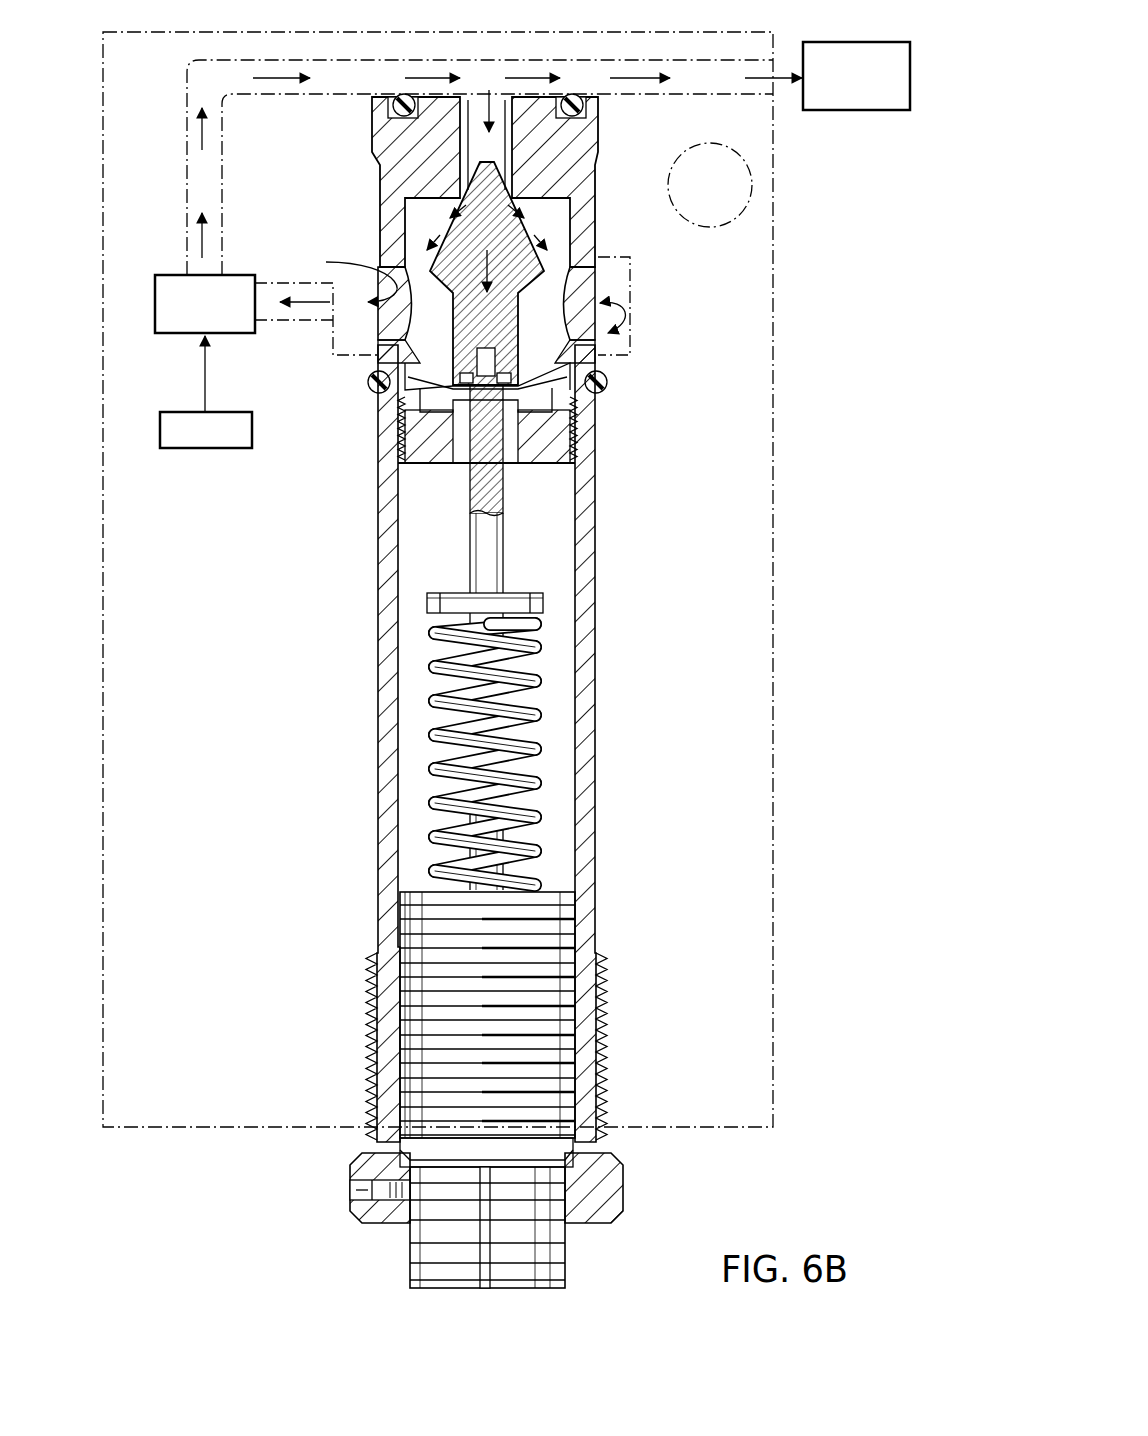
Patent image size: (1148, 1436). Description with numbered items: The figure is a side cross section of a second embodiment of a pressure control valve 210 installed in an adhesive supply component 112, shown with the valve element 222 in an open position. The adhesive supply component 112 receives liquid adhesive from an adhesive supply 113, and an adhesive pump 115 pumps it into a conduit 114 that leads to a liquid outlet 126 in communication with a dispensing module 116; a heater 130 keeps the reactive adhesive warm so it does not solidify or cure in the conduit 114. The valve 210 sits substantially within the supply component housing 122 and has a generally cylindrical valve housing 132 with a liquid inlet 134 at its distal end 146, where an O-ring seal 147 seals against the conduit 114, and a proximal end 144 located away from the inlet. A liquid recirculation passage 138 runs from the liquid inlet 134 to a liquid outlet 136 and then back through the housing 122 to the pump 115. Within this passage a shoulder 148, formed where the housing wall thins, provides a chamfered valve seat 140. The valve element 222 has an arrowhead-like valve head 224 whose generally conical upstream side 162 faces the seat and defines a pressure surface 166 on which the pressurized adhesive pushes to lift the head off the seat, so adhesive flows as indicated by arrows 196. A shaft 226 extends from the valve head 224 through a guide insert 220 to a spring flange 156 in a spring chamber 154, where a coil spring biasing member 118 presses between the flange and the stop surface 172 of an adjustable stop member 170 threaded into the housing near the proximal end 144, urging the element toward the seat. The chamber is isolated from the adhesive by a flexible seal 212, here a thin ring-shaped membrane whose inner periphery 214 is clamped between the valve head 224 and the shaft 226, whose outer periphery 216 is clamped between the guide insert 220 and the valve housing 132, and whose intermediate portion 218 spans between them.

The adhesive supply component 112 is at (780, 262).
The adhesive supply 113 is at (172, 412).
The conduit 114 is at (187, 126).
The adhesive pump 115 is at (172, 275).
The dispensing module 116 is at (836, 42).
The biasing member 118 is at (542, 742).
The supply component housing 122 is at (142, 32).
The liquid outlet 126 is at (770, 87).
The heater 130 is at (708, 228).
The valve housing 132 is at (386, 726).
The liquid inlet 134 is at (513, 177).
The liquid outlet 136 is at (600, 347).
The liquid recirculation passage 138 is at (276, 283).
The valve seat 140 is at (457, 190).
The proximal end 144 is at (355, 1180).
The distal end 146 is at (396, 94).
The O-ring seal 147 is at (380, 126).
The shoulder 148 is at (432, 248).
The spring chamber 154 is at (553, 654).
The spring flange 156 is at (427, 603).
The upstream side 162 is at (522, 253).
The pressure surface 166 is at (497, 174).
The stop member 170 is at (418, 930).
The stop surface 172 is at (398, 882).
The arrows 196 is at (638, 318).
The pressure control valve 210 is at (655, 478).
The flexible seal 212 is at (528, 372).
The inner periphery 214 is at (420, 400).
The outer periphery 216 is at (572, 394).
The intermediate portion 218 is at (412, 330).
The guide insert 220 is at (420, 442).
The valve element 222 is at (584, 290).
The valve head 224 is at (546, 264).
The shaft 226 is at (470, 497).